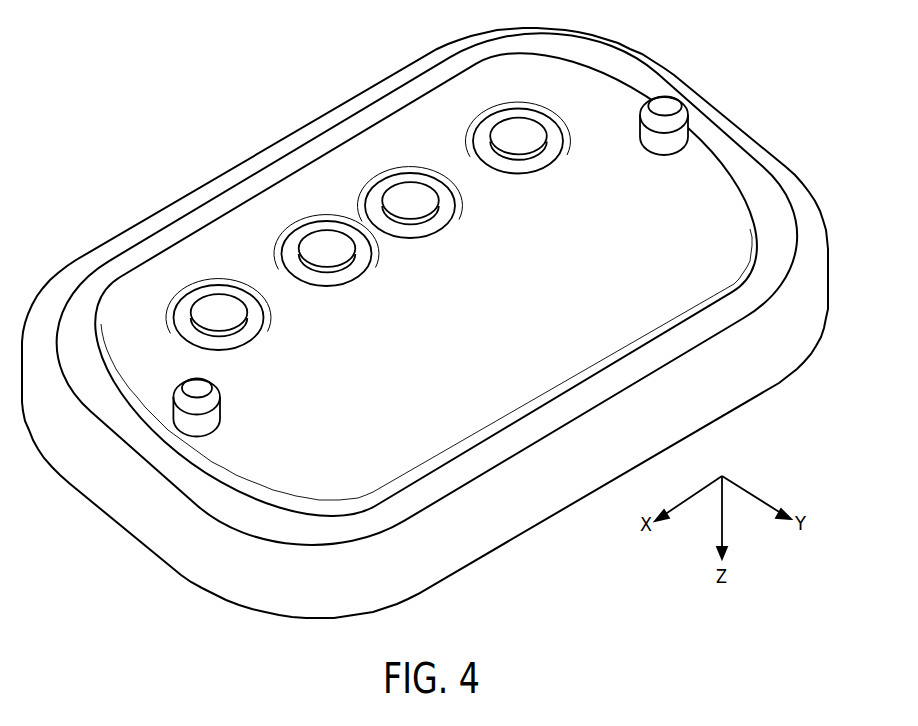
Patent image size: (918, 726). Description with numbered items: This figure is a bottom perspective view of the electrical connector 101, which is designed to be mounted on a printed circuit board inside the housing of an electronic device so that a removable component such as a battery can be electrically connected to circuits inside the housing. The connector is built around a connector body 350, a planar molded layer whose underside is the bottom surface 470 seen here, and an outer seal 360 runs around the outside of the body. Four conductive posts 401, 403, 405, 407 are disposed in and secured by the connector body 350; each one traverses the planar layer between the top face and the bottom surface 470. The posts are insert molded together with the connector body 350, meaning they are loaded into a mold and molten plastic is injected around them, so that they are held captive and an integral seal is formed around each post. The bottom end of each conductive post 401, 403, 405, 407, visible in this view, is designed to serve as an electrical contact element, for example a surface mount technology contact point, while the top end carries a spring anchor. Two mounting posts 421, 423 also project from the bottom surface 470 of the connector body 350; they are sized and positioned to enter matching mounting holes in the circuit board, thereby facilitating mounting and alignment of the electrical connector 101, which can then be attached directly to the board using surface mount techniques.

The electrical connector 101 is at (176, 143).
The connector body 350 is at (711, 193).
The outer seal 360 is at (813, 175).
The conductive post 401 is at (513, 130).
The conductive post 403 is at (405, 197).
The conductive post 405 is at (317, 247).
The conductive post 407 is at (213, 310).
The mounting post 421 is at (668, 103).
The mounting post 423 is at (200, 387).
The bottom surface 470 is at (472, 333).